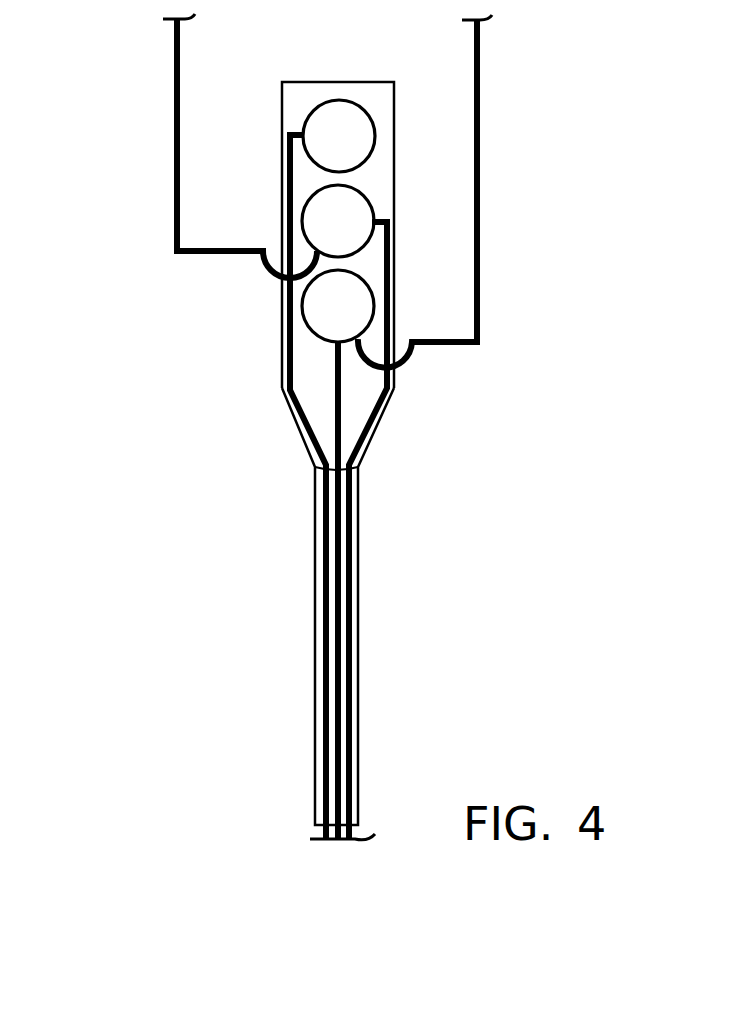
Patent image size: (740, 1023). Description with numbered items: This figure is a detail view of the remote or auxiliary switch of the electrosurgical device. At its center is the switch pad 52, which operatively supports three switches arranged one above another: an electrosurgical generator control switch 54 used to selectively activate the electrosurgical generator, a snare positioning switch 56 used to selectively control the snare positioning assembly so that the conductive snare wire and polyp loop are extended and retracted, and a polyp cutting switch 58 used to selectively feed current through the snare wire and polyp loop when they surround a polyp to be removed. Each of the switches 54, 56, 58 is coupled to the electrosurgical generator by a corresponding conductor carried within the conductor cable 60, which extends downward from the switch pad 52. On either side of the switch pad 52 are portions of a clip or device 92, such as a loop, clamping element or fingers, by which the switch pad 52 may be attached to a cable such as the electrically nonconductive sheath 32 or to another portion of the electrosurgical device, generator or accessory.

The electrically nonconductive sheath 32 is at (478, 37).
The clip or device 92 is at (175, 78).
The switch pad 52 is at (282, 295).
The electrosurgical generator control switch 54 is at (363, 127).
The snare positioning switch 56 is at (357, 223).
The polyp cutting switch 58 is at (350, 323).
The conductor cable 60 is at (322, 785).